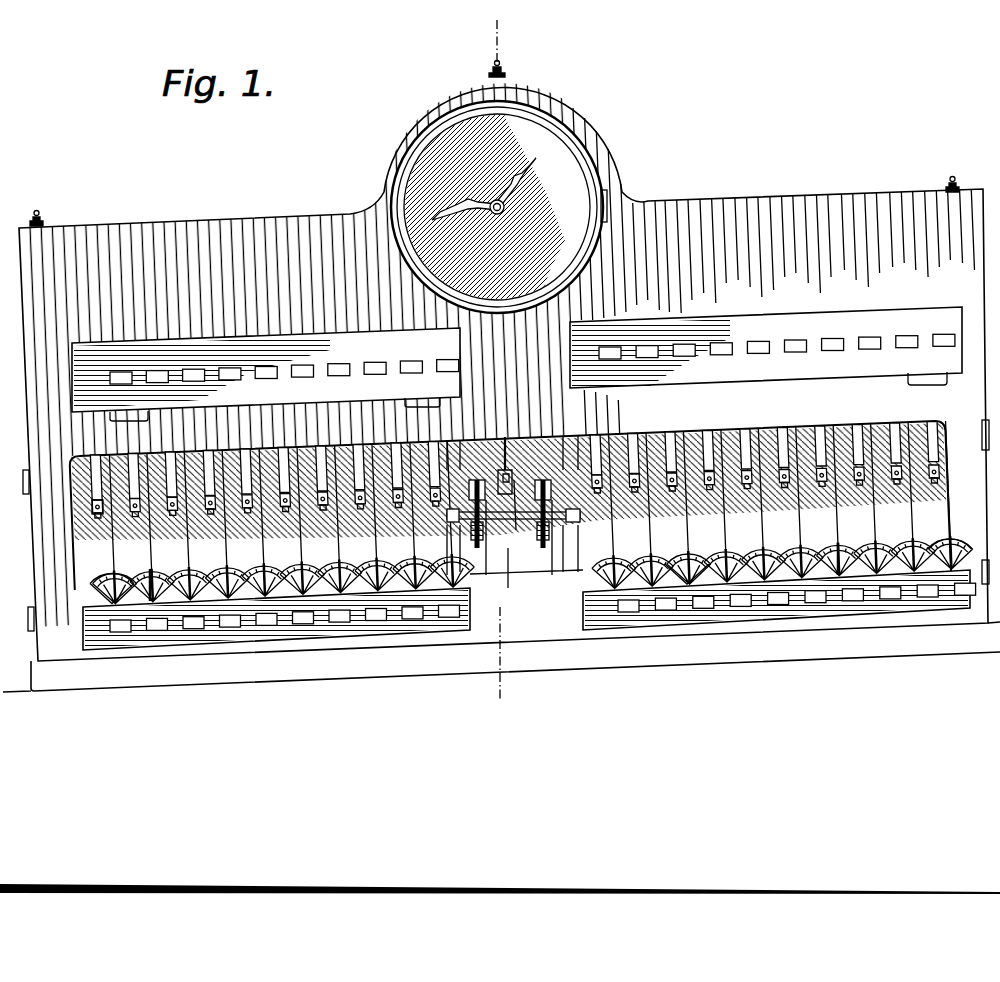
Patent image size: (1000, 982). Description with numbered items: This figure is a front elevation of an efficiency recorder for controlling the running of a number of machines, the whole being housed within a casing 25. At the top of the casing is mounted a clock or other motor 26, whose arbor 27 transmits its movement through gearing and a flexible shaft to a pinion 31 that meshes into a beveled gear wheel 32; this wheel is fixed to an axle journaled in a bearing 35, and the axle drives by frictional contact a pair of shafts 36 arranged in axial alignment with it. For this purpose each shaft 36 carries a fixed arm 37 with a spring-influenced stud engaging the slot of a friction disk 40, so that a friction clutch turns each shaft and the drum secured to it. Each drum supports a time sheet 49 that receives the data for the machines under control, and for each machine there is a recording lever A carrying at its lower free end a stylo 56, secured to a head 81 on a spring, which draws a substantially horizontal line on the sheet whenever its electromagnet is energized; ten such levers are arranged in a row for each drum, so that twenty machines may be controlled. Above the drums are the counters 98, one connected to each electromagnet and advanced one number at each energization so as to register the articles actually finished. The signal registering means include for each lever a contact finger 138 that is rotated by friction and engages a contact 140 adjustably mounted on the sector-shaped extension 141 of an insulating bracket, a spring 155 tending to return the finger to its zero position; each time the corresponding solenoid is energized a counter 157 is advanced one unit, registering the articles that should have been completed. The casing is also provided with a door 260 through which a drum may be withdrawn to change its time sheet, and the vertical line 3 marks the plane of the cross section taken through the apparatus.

The section line 3 is at (499, 361).
The casing 25 is at (214, 216).
The clock or other motor 26 is at (538, 147).
The arbor 27 is at (505, 212).
The counter 98 is at (362, 364).
The hinge 260 is at (26, 491).
The head 81 is at (97, 513).
The stylo 56 is at (335, 510).
The recording lever A is at (430, 478).
The time sheet 49 is at (533, 561).
The contact finger 138 is at (104, 592).
The contact 140 is at (160, 586).
The sector-shaped extension 141 is at (101, 597).
The spring 155 is at (595, 593).
The counter 157 is at (233, 631).
The pinion 31 is at (510, 474).
The shafts 36 is at (447, 520).
The fixed arm 37 is at (472, 480).
The beveled gear wheel 32 is at (517, 530).
The friction disk 40 is at (484, 535).
The bearing 35 is at (508, 570).